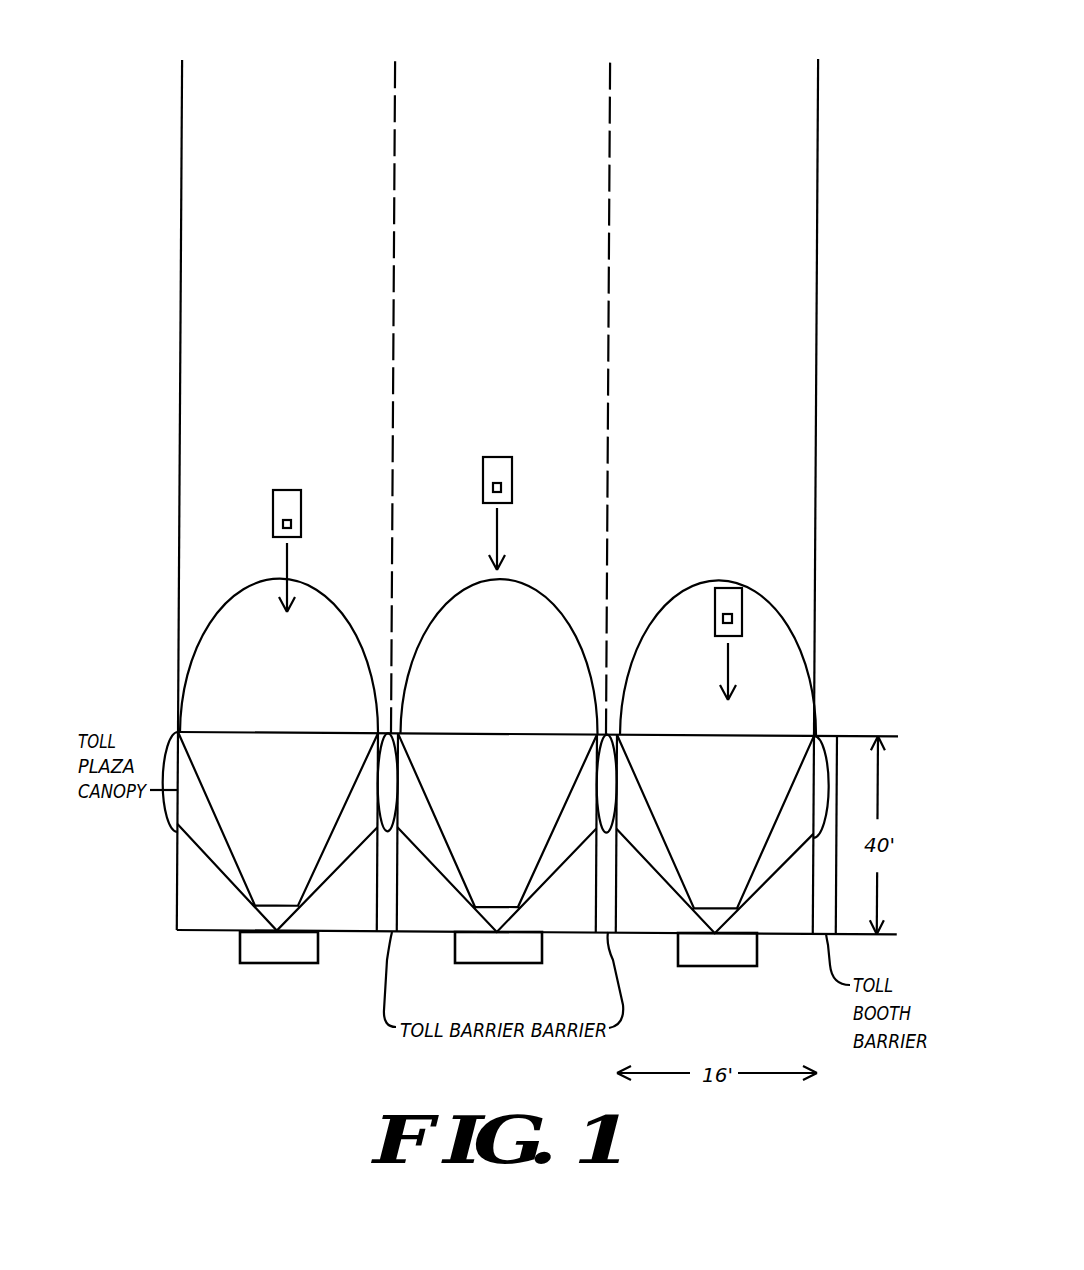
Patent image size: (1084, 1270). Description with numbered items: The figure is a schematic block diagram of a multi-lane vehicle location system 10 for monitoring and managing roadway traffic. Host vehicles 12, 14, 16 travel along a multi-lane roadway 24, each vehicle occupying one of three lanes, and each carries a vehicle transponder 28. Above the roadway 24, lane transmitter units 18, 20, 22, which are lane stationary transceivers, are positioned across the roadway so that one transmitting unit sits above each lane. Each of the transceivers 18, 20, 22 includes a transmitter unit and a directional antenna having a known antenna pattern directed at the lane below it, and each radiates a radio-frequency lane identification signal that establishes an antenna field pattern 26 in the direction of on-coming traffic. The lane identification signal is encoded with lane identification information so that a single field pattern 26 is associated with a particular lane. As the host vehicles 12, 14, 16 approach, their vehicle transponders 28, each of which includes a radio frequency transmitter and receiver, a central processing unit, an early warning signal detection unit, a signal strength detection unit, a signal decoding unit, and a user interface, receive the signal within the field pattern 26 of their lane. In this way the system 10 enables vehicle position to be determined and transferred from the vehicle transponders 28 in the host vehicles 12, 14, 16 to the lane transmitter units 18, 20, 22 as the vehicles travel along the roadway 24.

The multi-lane vehicle location system 10 is at (903, 643).
The host vehicle 12 is at (287, 490).
The host vehicle 14 is at (491, 457).
The host vehicle 16 is at (724, 588).
The lane transmitter unit 18 is at (283, 965).
The lane transmitter unit 20 is at (500, 965).
The lane transmitter unit 22 is at (718, 968).
The roadway 24 is at (742, 48).
The antenna field pattern 26 is at (356, 638).
The vehicle transponder 28 is at (283, 524).